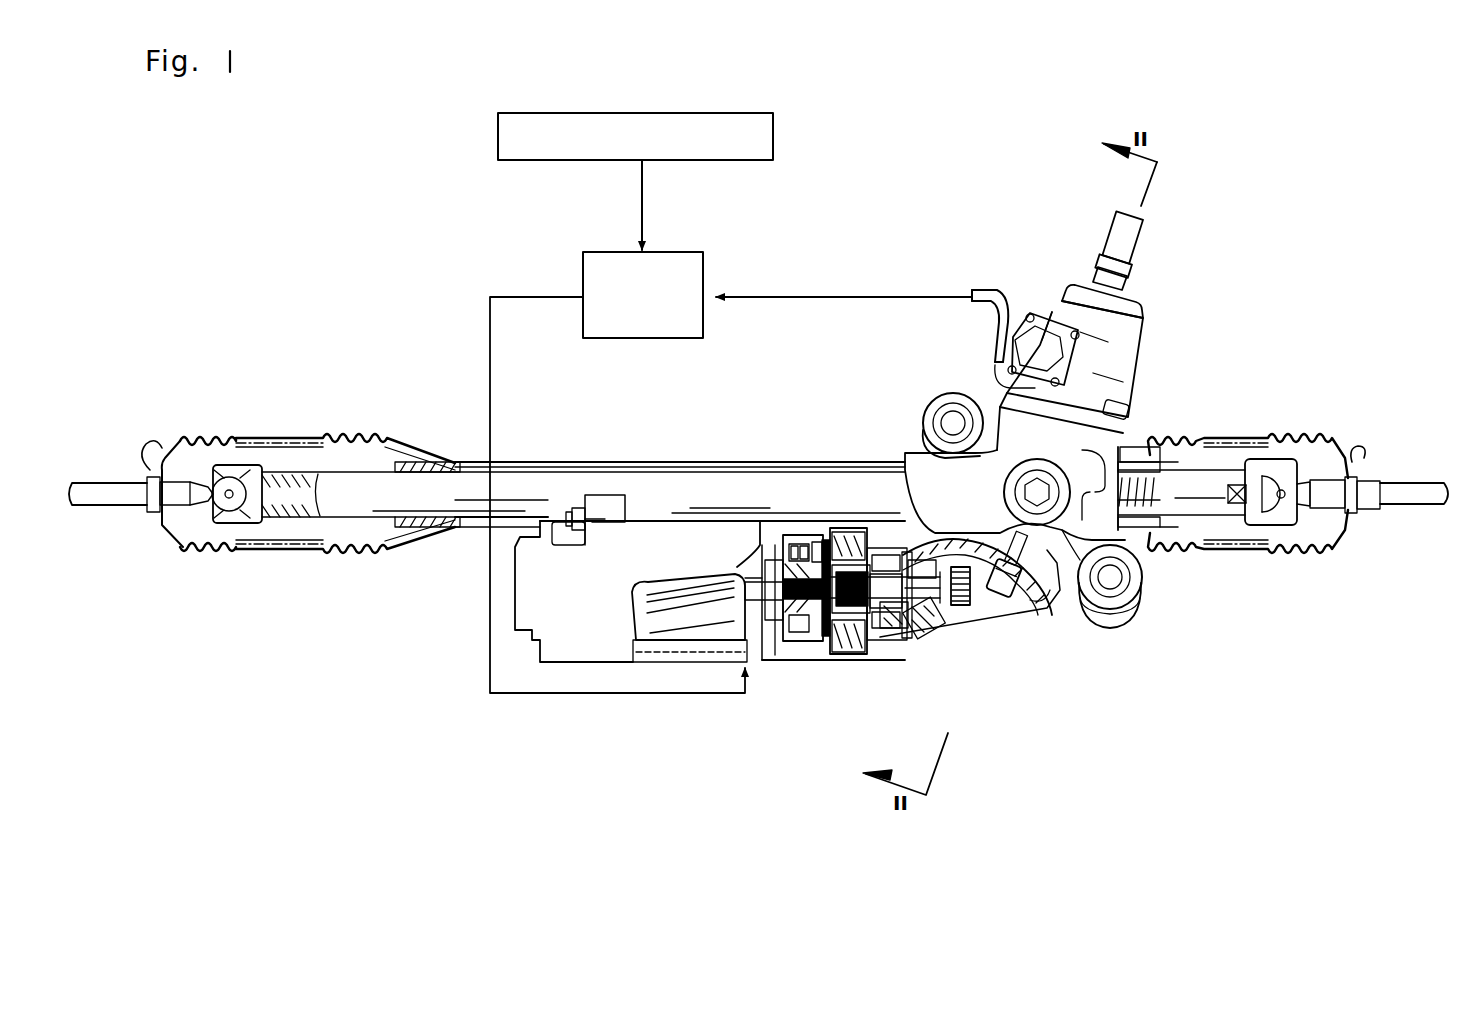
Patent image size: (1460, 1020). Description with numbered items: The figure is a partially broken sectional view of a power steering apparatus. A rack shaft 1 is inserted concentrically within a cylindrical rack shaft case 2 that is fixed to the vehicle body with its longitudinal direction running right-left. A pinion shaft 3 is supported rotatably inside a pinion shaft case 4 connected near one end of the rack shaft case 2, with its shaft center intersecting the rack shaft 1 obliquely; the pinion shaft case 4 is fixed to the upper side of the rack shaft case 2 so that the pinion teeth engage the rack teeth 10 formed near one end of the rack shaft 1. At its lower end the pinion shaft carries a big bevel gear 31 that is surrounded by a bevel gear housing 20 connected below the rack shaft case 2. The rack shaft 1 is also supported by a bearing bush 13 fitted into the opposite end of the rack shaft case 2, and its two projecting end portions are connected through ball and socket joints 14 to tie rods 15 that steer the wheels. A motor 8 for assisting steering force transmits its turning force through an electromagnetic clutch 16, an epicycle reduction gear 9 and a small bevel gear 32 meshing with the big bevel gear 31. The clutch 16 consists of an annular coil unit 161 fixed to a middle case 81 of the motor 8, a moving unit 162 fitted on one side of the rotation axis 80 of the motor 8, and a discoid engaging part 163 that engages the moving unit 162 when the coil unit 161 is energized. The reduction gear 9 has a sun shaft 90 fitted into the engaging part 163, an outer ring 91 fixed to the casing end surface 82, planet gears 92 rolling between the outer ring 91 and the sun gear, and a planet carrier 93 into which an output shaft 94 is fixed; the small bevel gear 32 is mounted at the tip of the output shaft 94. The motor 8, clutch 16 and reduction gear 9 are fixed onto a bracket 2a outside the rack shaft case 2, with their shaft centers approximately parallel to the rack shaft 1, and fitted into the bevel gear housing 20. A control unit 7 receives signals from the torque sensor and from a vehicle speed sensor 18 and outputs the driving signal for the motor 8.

The rack shaft 1 is at (548, 484).
The rack shaft case 2 is at (670, 472).
The bracket 2a is at (558, 530).
The pinion shaft 3 is at (1132, 265).
The pinion shaft case 4 is at (1122, 345).
The control unit 7 is at (703, 262).
The motor 8 is at (700, 676).
The epicycle reduction gear 9 is at (848, 675).
The rack teeth 10 is at (1162, 474).
The bearing bush 13 is at (420, 462).
The ball and socket joint 14 is at (240, 470).
The tie rod 15 is at (97, 485).
The electromagnetic clutch 16 is at (811, 675).
The vehicle speed sensor 18 is at (773, 131).
The bevel gear housing 20 is at (1003, 602).
The big bevel gear 31 is at (1040, 616).
The small bevel gear 32 is at (962, 608).
The rotation axis 80 is at (770, 592).
The middle case 81 is at (790, 650).
The casing end surface 82 is at (895, 646).
The sun shaft 90 is at (823, 605).
The outer ring 91 is at (856, 545).
The planet gear 92 is at (870, 640).
The planet carrier 93 is at (892, 648).
The output shaft 94 is at (918, 618).
The coil unit 161 is at (796, 546).
The moving unit 162 is at (812, 547).
The engaging part 163 is at (820, 548).